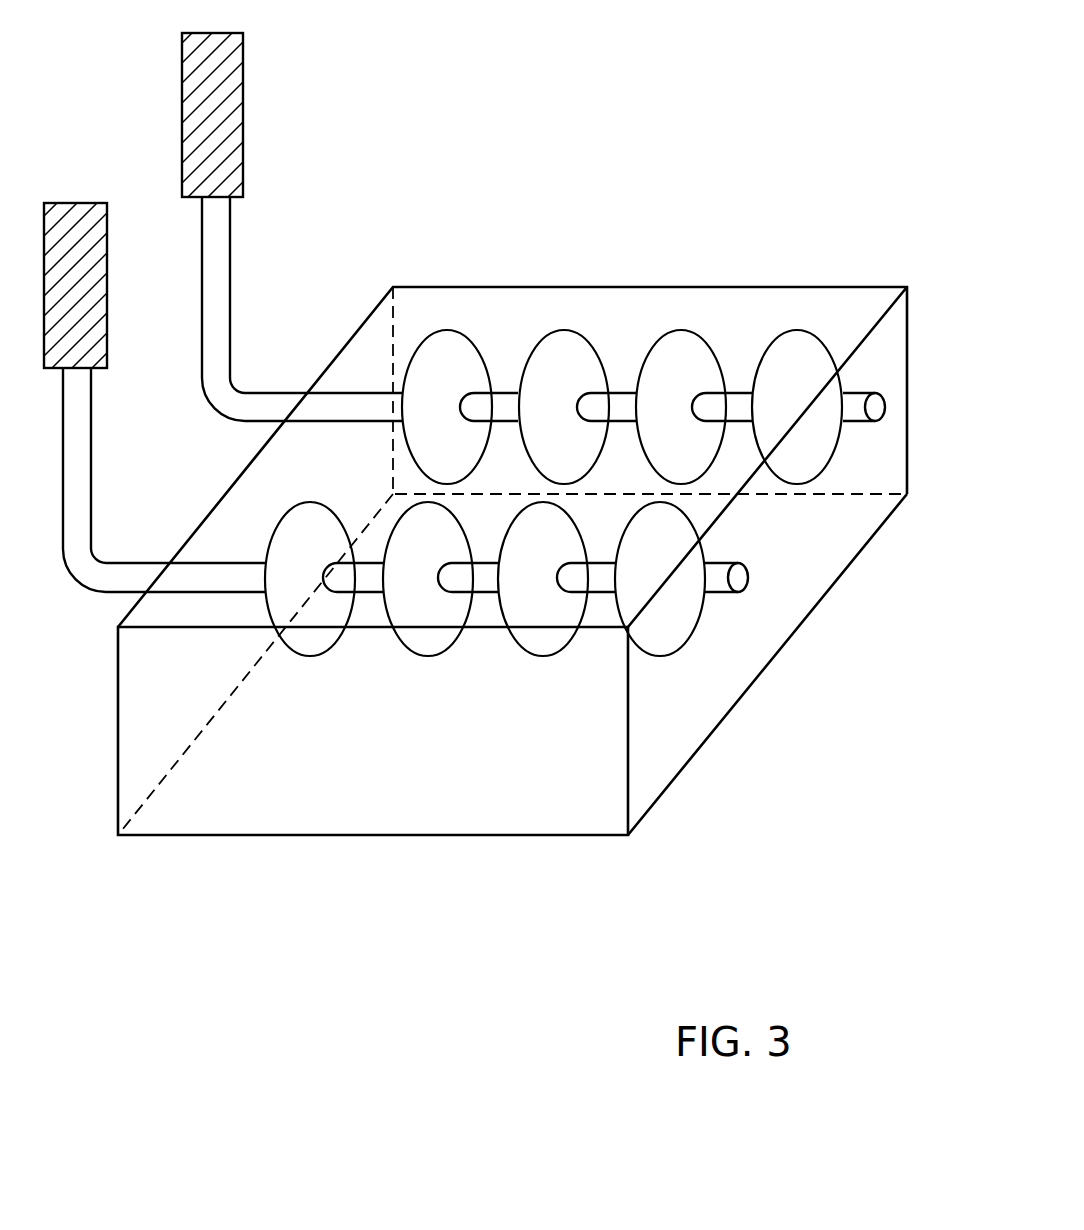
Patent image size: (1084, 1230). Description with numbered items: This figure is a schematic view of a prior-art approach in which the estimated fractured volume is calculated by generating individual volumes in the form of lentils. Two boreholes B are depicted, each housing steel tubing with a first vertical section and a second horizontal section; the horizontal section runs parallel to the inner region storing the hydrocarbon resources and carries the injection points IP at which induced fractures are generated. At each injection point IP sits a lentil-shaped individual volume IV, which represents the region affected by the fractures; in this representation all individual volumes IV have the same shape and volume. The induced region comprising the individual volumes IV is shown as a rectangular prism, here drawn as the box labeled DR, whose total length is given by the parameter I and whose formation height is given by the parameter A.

The borehole B is at (230, 228).
The individual volume IV is at (440, 343).
The injection point IP is at (670, 405).
The drum / reactor vessel DR is at (630, 757).
The formation height A is at (907, 287).
The total length of the induced region I is at (118, 845).